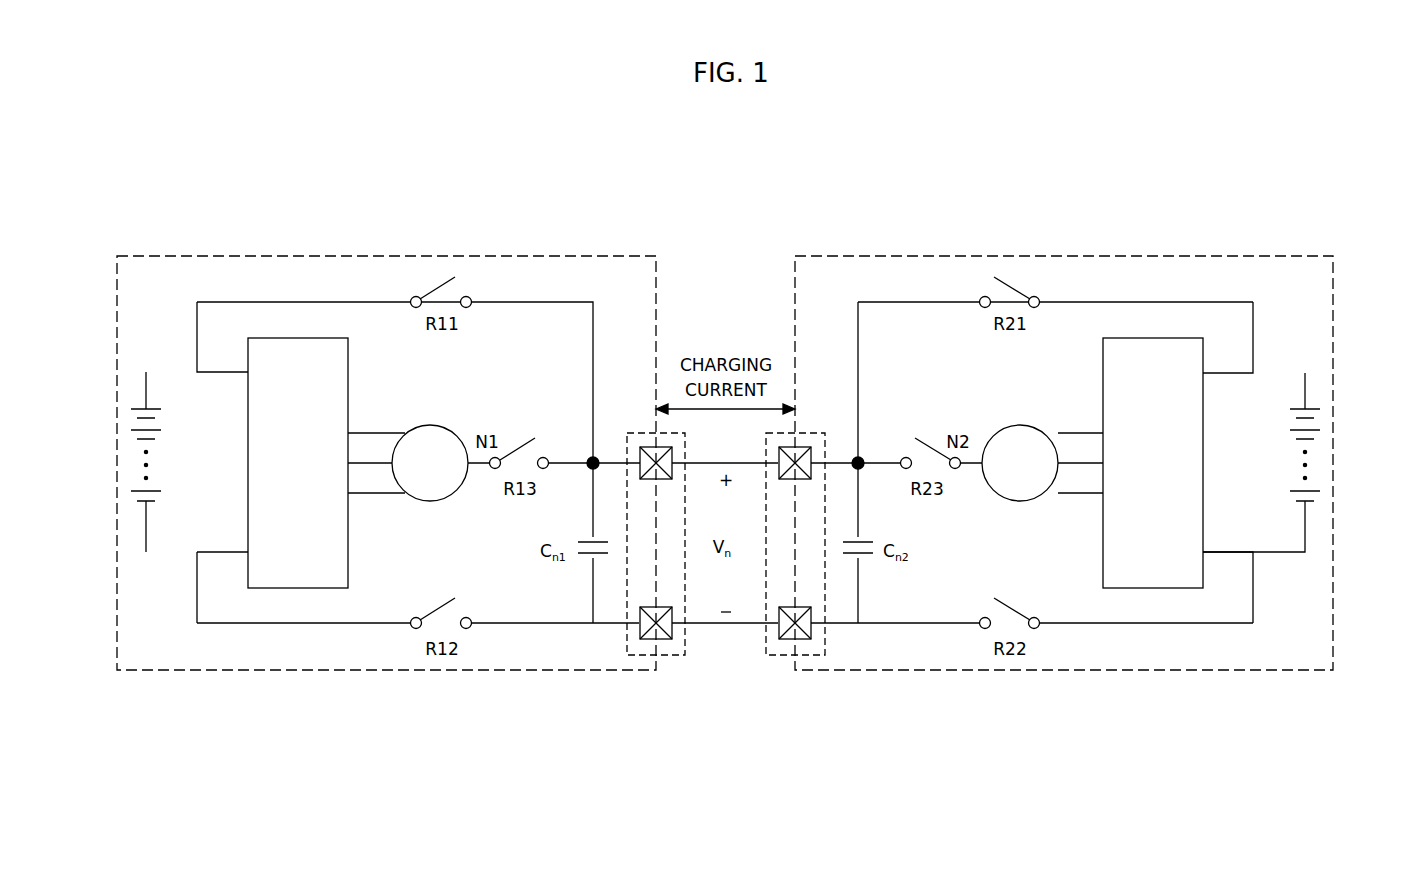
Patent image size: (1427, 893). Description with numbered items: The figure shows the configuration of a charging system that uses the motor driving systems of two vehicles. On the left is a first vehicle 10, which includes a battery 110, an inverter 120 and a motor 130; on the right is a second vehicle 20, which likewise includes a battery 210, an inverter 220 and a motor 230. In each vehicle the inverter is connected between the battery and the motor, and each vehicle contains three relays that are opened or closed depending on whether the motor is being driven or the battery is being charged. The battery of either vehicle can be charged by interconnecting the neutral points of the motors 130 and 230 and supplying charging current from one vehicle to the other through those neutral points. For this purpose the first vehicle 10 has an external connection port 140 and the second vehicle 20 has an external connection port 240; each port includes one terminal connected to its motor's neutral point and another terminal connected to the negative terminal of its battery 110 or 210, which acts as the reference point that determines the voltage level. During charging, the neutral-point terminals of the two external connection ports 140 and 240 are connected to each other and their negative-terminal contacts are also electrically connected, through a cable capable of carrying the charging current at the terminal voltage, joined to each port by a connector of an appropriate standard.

The first vehicle 10 is at (494, 256).
The second vehicle 20 is at (1255, 256).
The battery 110 is at (134, 463).
The inverter 120 is at (296, 338).
The motor 130 is at (430, 425).
The external connection port 140 is at (636, 655).
The battery 210 is at (1318, 463).
The inverter 220 is at (1152, 338).
The motor 230 is at (1020, 425).
The external connection port 240 is at (800, 655).